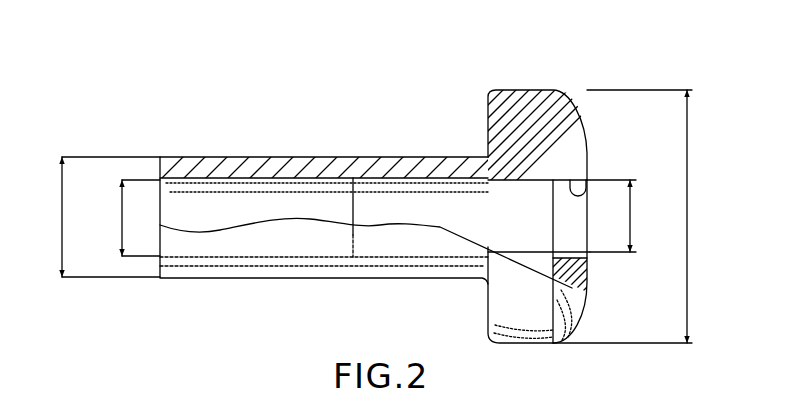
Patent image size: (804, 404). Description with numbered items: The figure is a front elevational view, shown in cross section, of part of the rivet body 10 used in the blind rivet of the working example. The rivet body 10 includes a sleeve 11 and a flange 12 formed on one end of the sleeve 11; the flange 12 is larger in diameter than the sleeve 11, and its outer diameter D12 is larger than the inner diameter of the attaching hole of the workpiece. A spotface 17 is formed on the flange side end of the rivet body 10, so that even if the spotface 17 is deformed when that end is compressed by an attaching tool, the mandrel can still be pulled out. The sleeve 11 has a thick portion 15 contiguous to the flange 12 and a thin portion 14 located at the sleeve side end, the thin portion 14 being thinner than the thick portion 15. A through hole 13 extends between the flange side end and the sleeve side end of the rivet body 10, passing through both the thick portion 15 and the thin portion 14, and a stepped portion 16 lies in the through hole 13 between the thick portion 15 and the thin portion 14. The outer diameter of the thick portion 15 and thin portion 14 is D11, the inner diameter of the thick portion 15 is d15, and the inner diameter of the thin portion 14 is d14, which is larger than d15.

The rivet body 10 is at (432, 100).
The sleeve 11 is at (397, 86).
The flange 12 is at (527, 107).
The through hole 13 is at (223, 188).
The thin portion 14 is at (282, 157).
The thick portion 15 is at (398, 157).
The stepped portion 16 is at (336, 176).
The spotface 17 is at (590, 186).
The outer diameter of sleeve D11 is at (91, 217).
The inner diameter of thin portion d14 is at (121, 218).
The inner diameter of thick portion d15 is at (628, 216).
The outer diameter of flange D12 is at (641, 216).